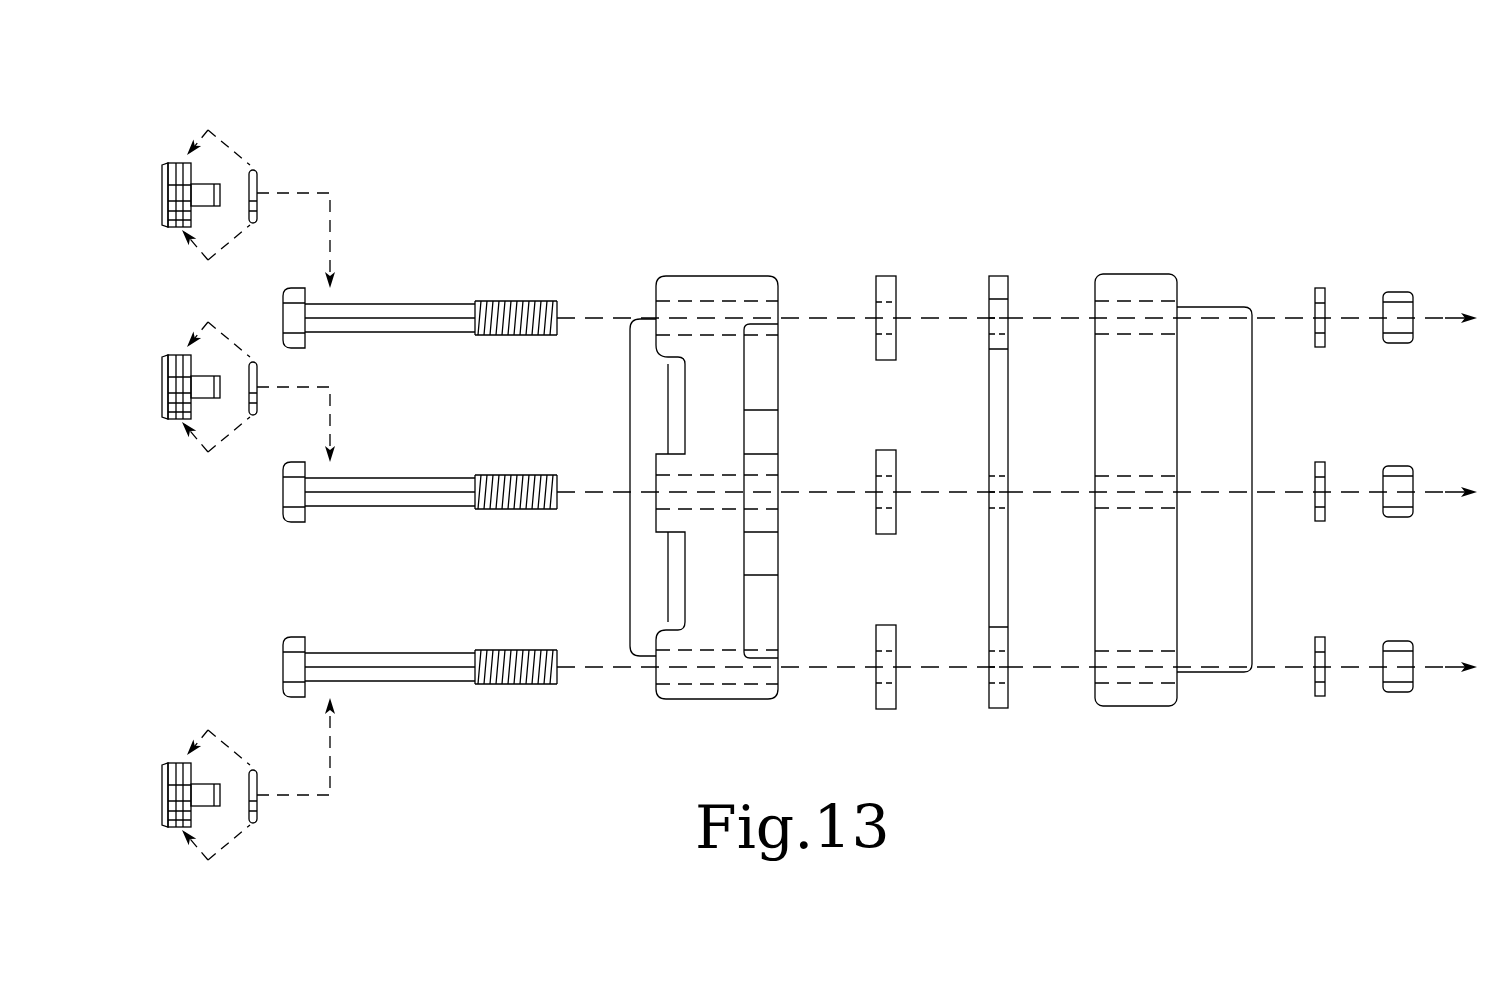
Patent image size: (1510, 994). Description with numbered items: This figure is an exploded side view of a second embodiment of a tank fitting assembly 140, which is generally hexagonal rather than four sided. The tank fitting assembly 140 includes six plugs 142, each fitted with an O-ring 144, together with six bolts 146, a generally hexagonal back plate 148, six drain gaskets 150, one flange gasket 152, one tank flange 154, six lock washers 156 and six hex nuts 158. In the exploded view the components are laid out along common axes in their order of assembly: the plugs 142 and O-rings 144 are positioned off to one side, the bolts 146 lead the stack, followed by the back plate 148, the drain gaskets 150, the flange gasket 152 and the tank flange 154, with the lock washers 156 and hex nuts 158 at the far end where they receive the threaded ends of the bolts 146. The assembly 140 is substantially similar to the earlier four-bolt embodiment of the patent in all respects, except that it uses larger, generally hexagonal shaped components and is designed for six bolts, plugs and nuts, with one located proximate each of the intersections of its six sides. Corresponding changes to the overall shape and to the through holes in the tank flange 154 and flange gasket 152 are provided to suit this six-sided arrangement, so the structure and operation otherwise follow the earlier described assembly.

The tank fitting assembly 140 is at (956, 148).
The plug 142 is at (175, 152).
The O-ring 144 is at (266, 156).
The bolt 146 is at (481, 286).
The back plate 148 is at (701, 263).
The drain gasket 150 is at (890, 263).
The flange gasket 152 is at (1001, 263).
The tank flange 154 is at (1141, 265).
The lock washer 156 is at (1323, 275).
The hex nut 158 is at (1403, 280).